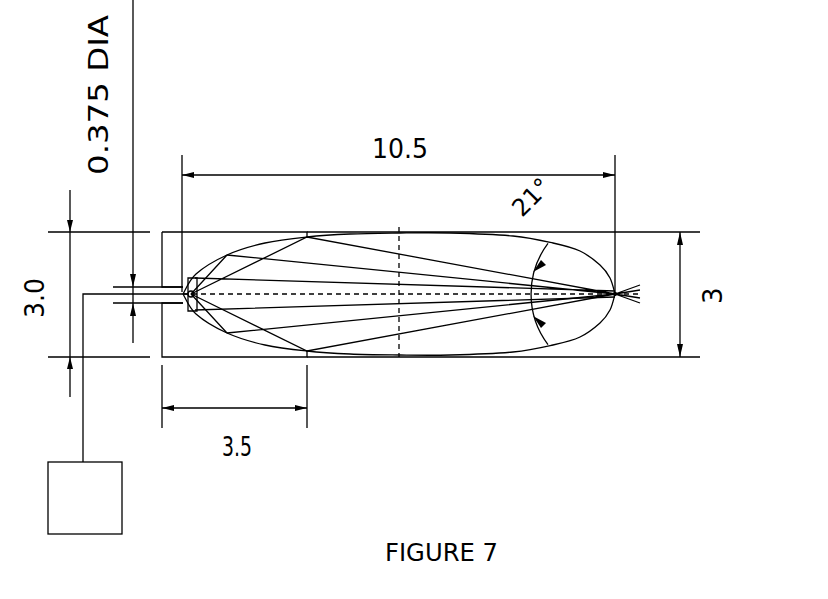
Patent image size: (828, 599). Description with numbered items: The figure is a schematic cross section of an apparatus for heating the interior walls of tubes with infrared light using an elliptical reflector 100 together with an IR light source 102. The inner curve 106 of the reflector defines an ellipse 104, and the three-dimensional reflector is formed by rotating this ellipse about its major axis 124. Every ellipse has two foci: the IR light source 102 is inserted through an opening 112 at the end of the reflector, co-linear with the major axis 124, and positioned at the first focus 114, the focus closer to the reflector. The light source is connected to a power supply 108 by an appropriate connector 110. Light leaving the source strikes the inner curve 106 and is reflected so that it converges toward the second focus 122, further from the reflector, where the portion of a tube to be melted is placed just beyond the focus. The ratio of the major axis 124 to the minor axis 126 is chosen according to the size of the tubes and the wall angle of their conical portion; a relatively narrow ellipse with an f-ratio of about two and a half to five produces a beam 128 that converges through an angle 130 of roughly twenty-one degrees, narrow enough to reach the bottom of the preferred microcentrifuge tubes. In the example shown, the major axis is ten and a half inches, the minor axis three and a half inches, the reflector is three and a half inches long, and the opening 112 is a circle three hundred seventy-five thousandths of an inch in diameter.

The elliptical reflector 100 is at (250, 232).
The IR light source 102 is at (198, 289).
The ellipse 104 is at (500, 347).
The inner curve 106 is at (300, 326).
The power supply 108 is at (122, 497).
The connector 110 is at (83, 445).
The opening 112 is at (160, 297).
The first focus 114 is at (198, 311).
The second focus 122 is at (616, 289).
The major axis 124 is at (477, 288).
The minor axis 126 is at (403, 250).
The beam 128 is at (417, 330).
The angle 130 is at (538, 277).